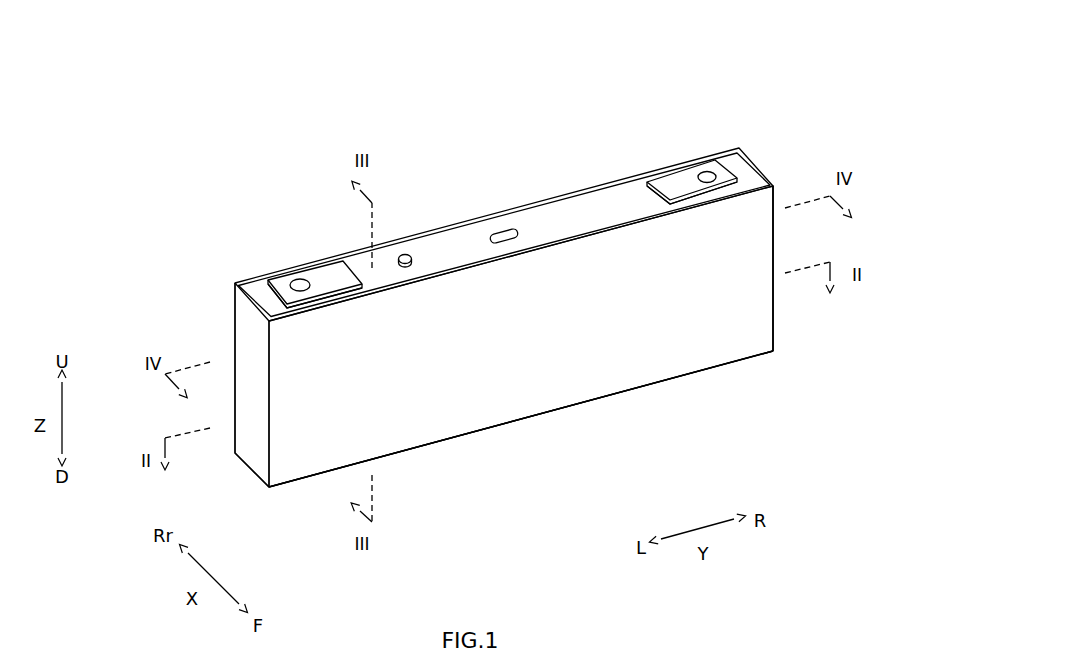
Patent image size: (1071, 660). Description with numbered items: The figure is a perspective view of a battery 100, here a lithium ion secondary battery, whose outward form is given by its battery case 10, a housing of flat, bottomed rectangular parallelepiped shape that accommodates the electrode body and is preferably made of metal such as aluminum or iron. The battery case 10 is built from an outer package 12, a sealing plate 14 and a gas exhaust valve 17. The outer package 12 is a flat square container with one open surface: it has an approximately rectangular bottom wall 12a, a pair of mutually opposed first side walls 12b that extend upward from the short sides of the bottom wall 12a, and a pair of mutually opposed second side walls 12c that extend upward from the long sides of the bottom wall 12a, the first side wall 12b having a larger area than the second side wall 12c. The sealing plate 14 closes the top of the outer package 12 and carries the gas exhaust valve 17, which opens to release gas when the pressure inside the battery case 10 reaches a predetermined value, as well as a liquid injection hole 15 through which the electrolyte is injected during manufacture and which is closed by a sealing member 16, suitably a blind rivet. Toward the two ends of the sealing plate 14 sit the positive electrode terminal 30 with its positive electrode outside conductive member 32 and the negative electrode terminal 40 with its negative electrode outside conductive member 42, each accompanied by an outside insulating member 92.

The battery 100 is at (686, 67).
The battery case 10 is at (622, 127).
The outer package 12 is at (617, 255).
The bottom wall 12a is at (481, 430).
The first side wall 12b is at (470, 223).
The second side wall 12c is at (775, 333).
The sealing plate 14 is at (574, 212).
The liquid injection hole 15 is at (409, 255).
The sealing member 16 is at (401, 254).
The gas exhaust valve 17 is at (504, 224).
The positive electrode terminal 30 is at (297, 278).
The positive electrode outside conductive member 32 is at (333, 277).
The negative electrode terminal 40 is at (705, 171).
The negative electrode outside conductive member 42 is at (672, 181).
The outside insulating member 92 is at (267, 283).